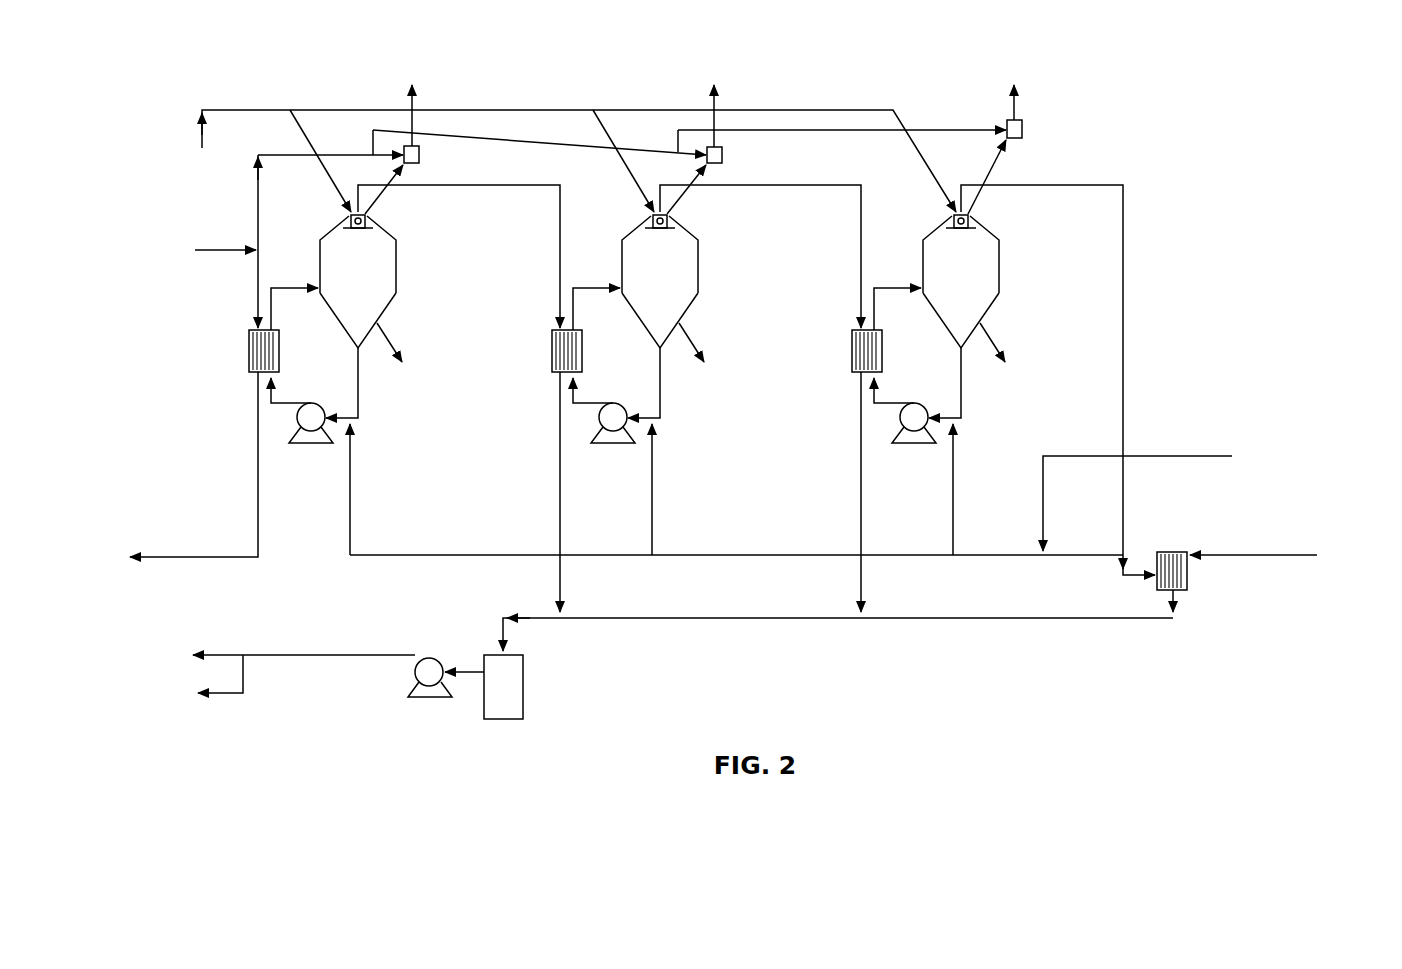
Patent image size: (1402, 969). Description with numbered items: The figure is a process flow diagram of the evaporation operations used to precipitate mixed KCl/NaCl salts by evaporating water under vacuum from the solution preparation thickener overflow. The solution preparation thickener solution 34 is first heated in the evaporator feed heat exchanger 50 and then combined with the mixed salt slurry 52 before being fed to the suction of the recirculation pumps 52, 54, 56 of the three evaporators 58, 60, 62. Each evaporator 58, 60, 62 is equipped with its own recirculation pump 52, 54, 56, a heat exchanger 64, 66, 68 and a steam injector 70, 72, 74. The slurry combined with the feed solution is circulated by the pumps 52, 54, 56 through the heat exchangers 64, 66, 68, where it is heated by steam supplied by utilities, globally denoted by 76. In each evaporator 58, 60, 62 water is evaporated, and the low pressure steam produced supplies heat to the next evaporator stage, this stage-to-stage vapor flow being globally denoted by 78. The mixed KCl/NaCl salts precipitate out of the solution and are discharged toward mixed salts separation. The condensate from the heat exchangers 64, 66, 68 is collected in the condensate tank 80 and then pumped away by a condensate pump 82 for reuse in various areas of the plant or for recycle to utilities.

The solution preparation thickener solution 34 is at (1340, 625).
The evaporator feed heat exchanger 50 is at (1183, 592).
The recirculation pump 52 is at (912, 447).
The recirculation pump 54 is at (612, 447).
The recirculation pump 56 is at (310, 447).
The evaporator 58 is at (388, 278).
The evaporator 60 is at (690, 278).
The evaporator 62 is at (990, 278).
The heat exchanger 64 is at (249, 347).
The heat exchanger 66 is at (582, 347).
The heat exchanger 68 is at (882, 347).
The steam injector 70 is at (420, 153).
The steam injector 72 is at (722, 154).
The steam injector 74 is at (1022, 130).
The steam supplied by utilities 76 is at (223, 253).
The low pressure steam to next evaporator stage 78 is at (560, 230).
The condensate tank 80 is at (523, 688).
The condensate pump 82 is at (430, 668).